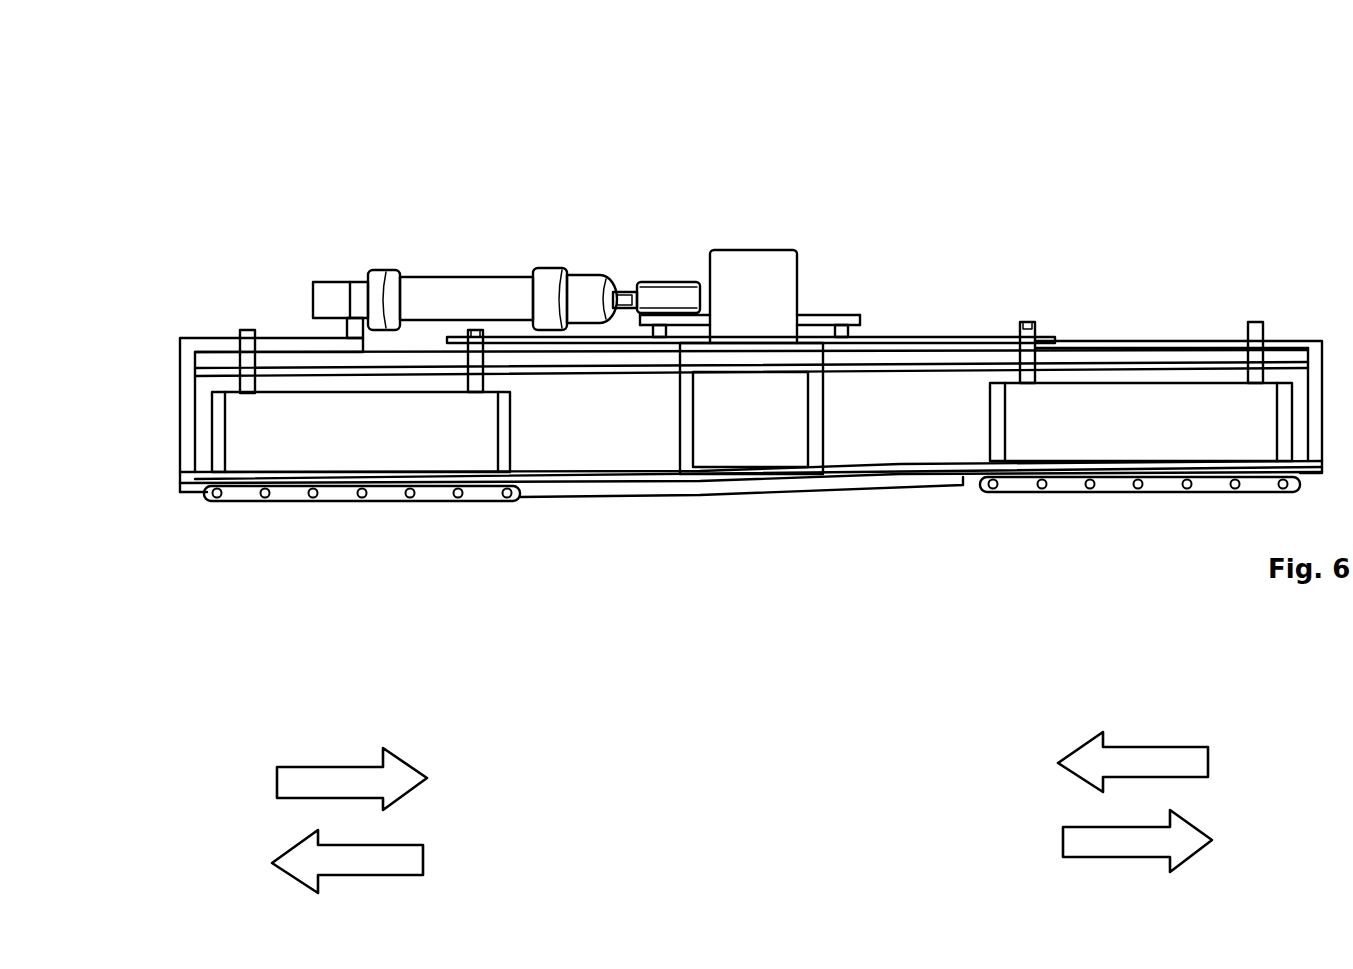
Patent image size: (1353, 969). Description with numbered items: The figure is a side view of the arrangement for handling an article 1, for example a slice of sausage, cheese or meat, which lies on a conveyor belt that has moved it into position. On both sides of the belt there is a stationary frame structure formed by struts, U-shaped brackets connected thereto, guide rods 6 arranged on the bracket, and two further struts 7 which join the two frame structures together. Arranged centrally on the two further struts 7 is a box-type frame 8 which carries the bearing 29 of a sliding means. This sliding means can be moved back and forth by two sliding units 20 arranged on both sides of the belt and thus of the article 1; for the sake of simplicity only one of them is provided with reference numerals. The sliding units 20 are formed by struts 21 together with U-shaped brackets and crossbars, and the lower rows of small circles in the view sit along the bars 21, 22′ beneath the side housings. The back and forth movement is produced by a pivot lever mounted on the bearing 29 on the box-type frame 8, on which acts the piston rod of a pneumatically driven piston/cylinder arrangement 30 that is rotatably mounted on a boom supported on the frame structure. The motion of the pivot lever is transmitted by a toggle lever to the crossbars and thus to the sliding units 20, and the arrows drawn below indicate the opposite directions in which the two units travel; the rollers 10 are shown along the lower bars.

The article 1 is at (766, 497).
The guide rods 6 is at (300, 388).
The further struts 7 is at (633, 472).
The box-type frame 8 is at (773, 343).
The rollers 10 is at (412, 495).
The sliding units 20 is at (240, 373).
The struts 21 is at (347, 493).
The side housings 22′ is at (222, 435).
The bearing 29 is at (727, 277).
The piston/cylinder arrangement 30 is at (475, 295).